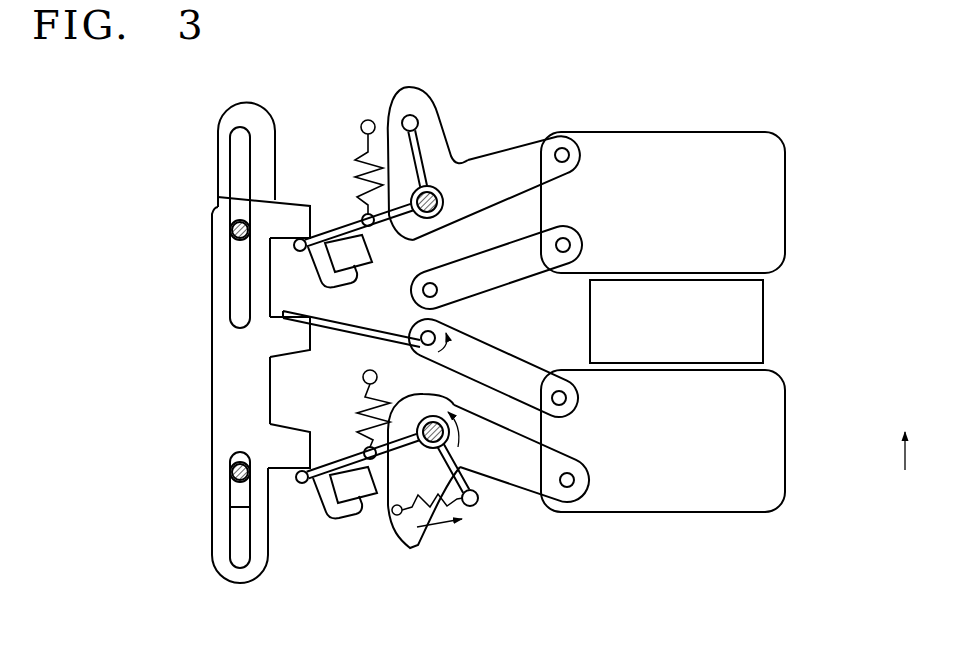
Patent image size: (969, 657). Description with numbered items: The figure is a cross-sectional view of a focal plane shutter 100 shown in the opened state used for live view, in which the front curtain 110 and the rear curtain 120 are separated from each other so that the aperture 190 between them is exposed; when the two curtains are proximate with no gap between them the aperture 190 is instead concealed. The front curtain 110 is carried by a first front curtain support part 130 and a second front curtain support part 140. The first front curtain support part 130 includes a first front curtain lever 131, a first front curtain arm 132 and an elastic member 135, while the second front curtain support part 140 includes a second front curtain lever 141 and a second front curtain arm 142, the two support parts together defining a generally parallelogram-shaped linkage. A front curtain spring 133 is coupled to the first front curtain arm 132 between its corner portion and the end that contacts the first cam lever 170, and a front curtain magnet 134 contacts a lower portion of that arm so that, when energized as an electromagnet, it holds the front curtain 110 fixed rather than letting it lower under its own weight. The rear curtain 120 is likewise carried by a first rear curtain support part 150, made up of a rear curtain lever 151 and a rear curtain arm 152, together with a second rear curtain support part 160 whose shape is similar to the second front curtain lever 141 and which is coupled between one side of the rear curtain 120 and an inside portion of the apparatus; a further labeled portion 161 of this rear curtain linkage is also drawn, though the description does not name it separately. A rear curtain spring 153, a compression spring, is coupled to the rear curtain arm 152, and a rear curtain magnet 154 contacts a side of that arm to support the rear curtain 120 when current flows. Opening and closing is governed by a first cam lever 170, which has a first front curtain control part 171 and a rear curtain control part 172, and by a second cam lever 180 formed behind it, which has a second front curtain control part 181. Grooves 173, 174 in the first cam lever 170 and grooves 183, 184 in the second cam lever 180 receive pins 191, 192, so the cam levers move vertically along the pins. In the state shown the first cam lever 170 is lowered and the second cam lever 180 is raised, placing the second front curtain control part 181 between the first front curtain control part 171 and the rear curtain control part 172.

The focal plane shutter 100 is at (738, 84).
The front curtain 110 is at (767, 447).
The rear curtain 120 is at (767, 205).
The first front curtain support part 130 is at (487, 552).
The first front curtain lever 131 is at (517, 470).
The first front curtain arm 132 is at (303, 492).
The front curtain spring 133 is at (358, 400).
The front curtain magnet 134 is at (348, 492).
The elastic member 135 is at (433, 510).
The second front curtain support part 140 is at (598, 411).
The second front curtain lever 141 is at (466, 347).
The second front curtain arm 142 is at (348, 334).
The first rear curtain support part 150 is at (510, 100).
The rear curtain lever 151 is at (528, 158).
The rear curtain arm 152 is at (334, 226).
The rear curtain spring 153 is at (360, 120).
The rear curtain magnet 154 is at (293, 247).
The second rear curtain support part 160 is at (600, 228).
The latch lever 161 is at (485, 248).
The first cam lever 170 is at (230, 357).
The first front curtain control part 171 is at (300, 440).
The rear curtain control part 172 is at (293, 210).
The groove 173 is at (237, 537).
The groove 174 is at (238, 287).
The second cam lever 180 is at (222, 119).
The second front curtain control part 181 is at (297, 340).
The groove 183 is at (232, 470).
The groove 184 is at (240, 165).
The aperture 190 is at (747, 323).
The pin 191 is at (232, 455).
The pin 192 is at (230, 226).